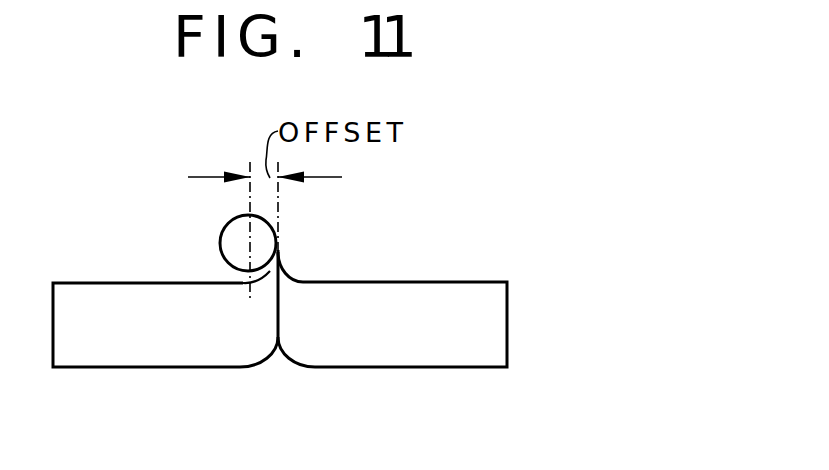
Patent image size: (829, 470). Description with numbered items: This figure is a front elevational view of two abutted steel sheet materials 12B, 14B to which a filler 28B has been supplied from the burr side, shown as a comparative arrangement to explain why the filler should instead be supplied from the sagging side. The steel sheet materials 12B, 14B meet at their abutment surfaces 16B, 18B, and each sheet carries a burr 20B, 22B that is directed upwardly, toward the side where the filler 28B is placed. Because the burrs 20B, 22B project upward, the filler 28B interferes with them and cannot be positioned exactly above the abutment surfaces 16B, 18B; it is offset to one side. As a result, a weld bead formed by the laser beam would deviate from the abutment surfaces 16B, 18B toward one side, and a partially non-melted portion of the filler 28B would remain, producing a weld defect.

The steel sheet material 12B is at (122, 343).
The steel sheet material 14B is at (448, 293).
The abutment surface 16B is at (292, 320).
The abutment surface 18B is at (264, 309).
The burr 20B is at (247, 283).
The burr 22B is at (285, 268).
The filler 28B is at (218, 240).